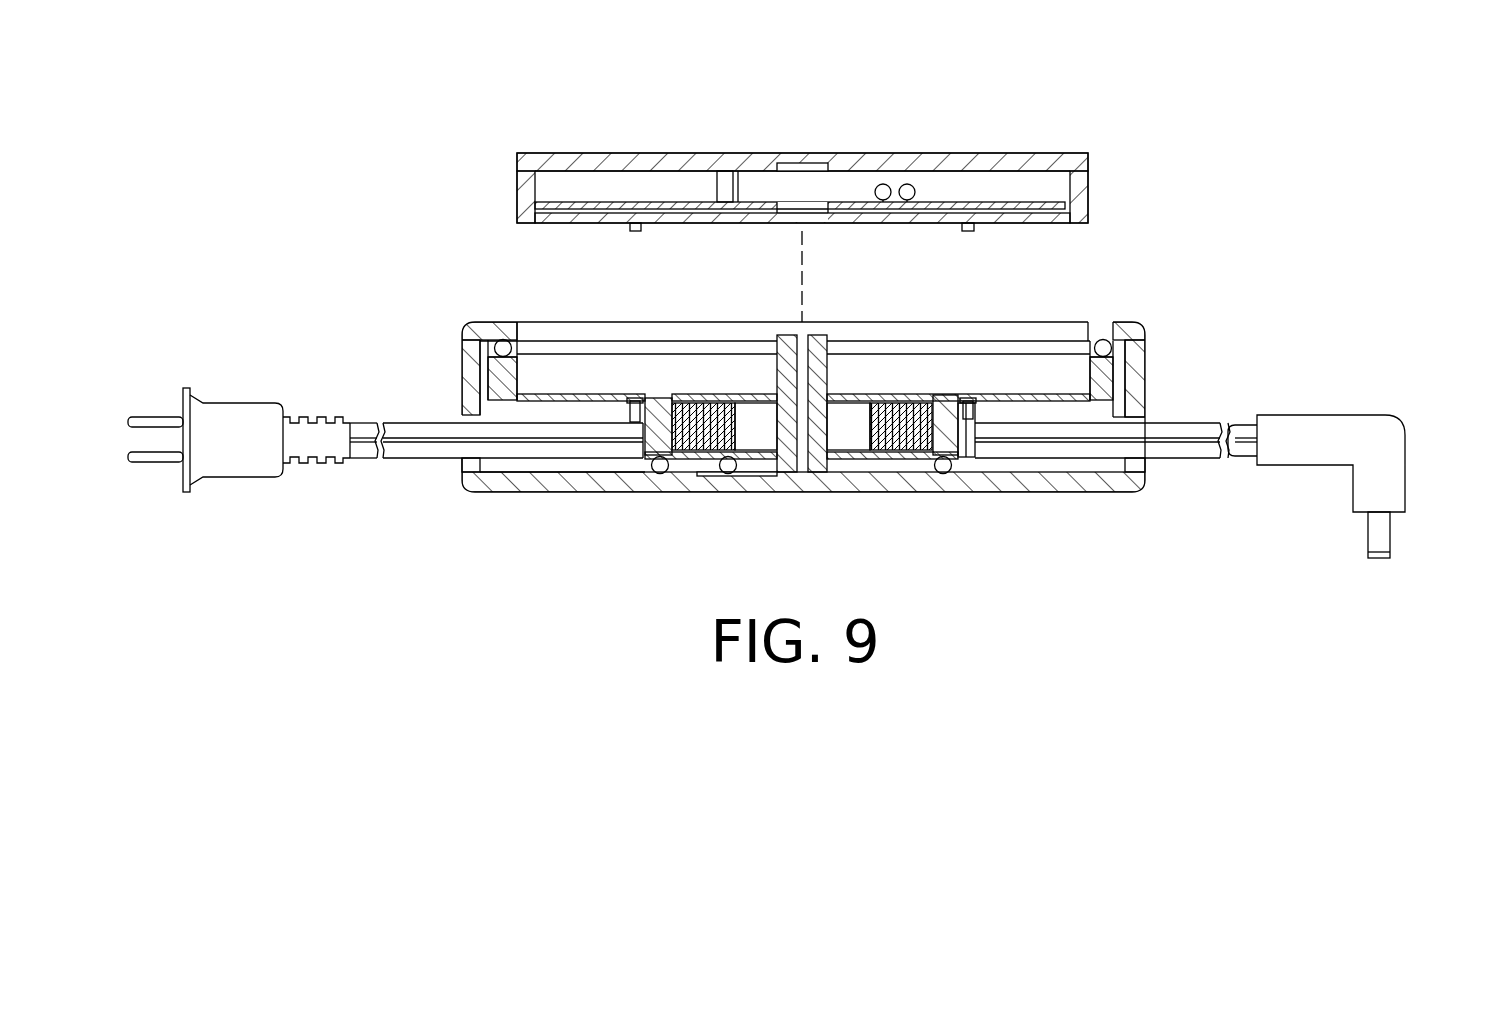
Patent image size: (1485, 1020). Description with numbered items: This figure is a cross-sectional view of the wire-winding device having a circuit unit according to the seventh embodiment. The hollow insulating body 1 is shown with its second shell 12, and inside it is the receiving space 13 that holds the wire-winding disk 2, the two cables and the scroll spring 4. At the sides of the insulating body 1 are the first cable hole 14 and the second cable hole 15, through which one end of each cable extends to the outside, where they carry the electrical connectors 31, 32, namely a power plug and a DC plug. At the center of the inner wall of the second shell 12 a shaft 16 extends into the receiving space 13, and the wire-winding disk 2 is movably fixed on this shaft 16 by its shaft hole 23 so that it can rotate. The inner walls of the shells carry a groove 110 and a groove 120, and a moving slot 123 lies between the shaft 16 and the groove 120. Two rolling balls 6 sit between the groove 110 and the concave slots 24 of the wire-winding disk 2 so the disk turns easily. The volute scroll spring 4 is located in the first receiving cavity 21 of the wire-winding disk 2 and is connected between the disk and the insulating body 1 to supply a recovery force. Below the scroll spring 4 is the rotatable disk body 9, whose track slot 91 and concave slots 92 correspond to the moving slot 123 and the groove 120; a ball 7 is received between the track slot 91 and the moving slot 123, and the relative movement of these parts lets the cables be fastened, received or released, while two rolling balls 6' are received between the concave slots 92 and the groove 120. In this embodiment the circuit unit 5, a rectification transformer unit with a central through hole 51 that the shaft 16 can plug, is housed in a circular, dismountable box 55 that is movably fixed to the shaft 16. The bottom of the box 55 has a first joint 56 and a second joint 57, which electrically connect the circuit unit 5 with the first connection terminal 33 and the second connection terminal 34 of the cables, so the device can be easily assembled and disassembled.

The insulating body 1 is at (462, 352).
The wire-winding disk 2 is at (1125, 405).
The scroll spring 4 is at (687, 455).
The circuit unit 5 is at (1068, 197).
The rolling balls 6 is at (497, 320).
The rolling balls 6' is at (648, 513).
The ball 7 is at (725, 478).
The disk body 9 is at (863, 459).
The second shell 12 is at (470, 490).
The receiving space 13 is at (520, 475).
The first cable hole 14 is at (462, 415).
The second cable hole 15 is at (1143, 467).
The shaft 16 is at (827, 343).
The first receiving cavity 21 is at (913, 455).
The shaft hole 23 is at (752, 400).
The concave slots 24 is at (1115, 374).
The electrical connector 31 is at (188, 400).
The electrical connector 32 is at (1400, 468).
The first connection terminal 33 is at (655, 395).
The second connection terminal 34 is at (985, 400).
The through hole 51 is at (835, 202).
The box 55 is at (983, 160).
The first joint 56 is at (633, 231).
The second joint 57 is at (968, 231).
The track slot 91 is at (750, 459).
The concave slots 92 is at (953, 470).
The groove 110 is at (1108, 337).
The groove 120 is at (945, 475).
The moving slot 123 is at (733, 476).